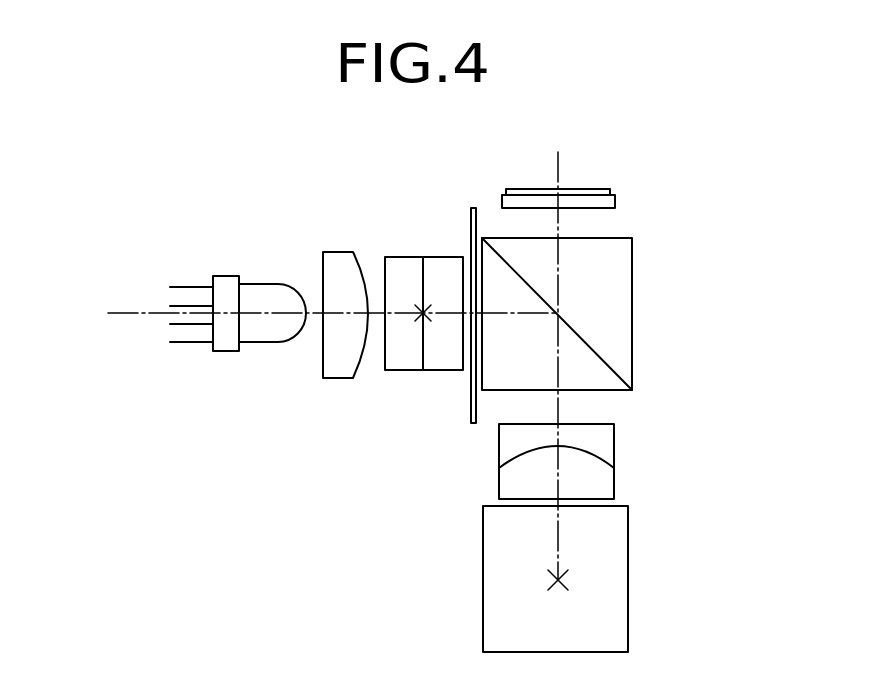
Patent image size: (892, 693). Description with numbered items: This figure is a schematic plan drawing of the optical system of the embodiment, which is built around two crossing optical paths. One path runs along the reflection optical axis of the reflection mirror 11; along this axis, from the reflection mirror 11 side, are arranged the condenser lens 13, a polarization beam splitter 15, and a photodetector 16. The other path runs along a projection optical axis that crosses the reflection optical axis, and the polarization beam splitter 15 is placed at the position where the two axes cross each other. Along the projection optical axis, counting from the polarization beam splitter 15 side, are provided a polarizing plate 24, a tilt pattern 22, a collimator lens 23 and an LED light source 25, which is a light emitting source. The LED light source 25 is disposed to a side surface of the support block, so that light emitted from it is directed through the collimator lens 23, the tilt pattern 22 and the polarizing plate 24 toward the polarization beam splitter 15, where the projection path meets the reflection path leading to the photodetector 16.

The reflection mirror 11 is at (628, 542).
The condenser lens 13 is at (614, 450).
The polarization beam splitter 15 is at (632, 290).
The photodetector 16 is at (592, 189).
The tilt pattern 22 is at (407, 370).
The collimator lens 23 is at (335, 252).
The polarizing plate 24 is at (471, 232).
The LED light source 25 is at (264, 342).